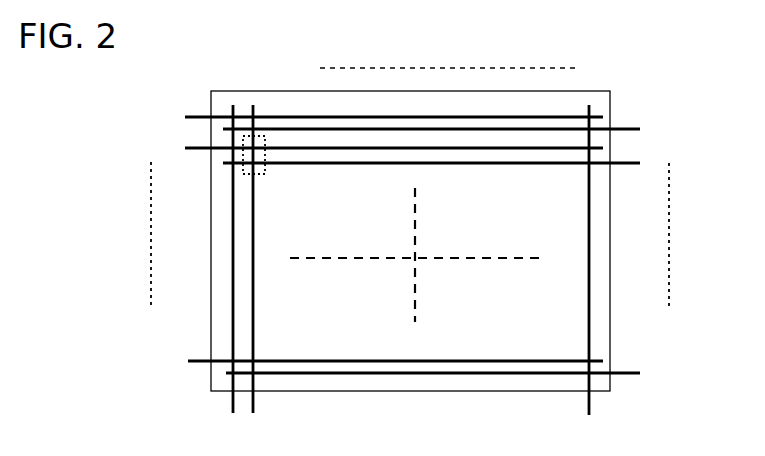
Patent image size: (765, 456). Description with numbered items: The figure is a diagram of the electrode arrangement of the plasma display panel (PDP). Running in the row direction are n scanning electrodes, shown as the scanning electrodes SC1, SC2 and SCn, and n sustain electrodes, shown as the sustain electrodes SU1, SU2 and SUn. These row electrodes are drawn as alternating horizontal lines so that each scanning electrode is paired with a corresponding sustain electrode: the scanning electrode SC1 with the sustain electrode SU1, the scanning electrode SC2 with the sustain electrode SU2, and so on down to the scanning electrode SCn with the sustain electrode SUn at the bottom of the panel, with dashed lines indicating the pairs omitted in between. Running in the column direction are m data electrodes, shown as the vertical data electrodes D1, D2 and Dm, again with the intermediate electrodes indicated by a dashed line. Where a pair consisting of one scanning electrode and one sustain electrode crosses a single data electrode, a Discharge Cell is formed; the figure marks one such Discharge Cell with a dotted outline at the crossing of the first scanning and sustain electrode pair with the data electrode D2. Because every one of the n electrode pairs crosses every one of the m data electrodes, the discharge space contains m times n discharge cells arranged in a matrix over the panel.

The sustain electrode SU1 is at (200, 117).
The sustain electrode SU2 is at (200, 148).
The sustain electrode SUn is at (197, 361).
The scanning electrode SC1 is at (640, 129).
The scanning electrode SC2 is at (640, 163).
The scanning electrode SCn is at (628, 373).
The data electrode D1 is at (233, 105).
The data electrode D2 is at (253, 105).
The data electrode Dm is at (589, 105).
The discharge cell Discharge Cell is at (265, 138).